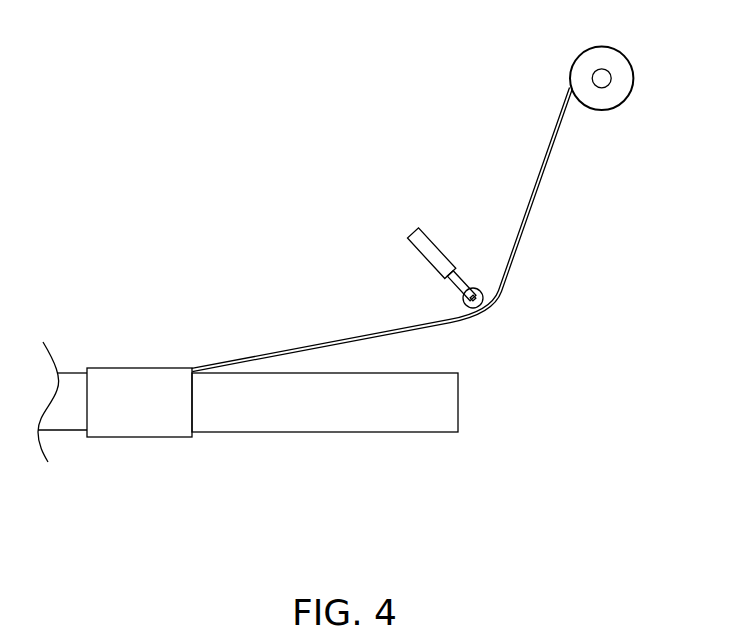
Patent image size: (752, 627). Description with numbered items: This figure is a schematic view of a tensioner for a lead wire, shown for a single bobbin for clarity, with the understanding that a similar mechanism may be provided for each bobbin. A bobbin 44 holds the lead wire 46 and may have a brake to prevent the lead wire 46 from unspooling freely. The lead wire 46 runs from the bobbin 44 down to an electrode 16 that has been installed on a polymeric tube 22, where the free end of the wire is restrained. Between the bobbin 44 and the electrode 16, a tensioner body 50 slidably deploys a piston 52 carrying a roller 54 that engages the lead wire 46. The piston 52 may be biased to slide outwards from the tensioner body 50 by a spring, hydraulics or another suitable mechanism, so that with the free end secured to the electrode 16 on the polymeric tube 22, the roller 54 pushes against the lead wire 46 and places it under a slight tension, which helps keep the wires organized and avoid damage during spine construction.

The electrode 16 is at (142, 367).
The polymeric tube 22 is at (257, 432).
The bobbin 44 is at (580, 57).
The lead wire 46 is at (527, 220).
The tensioner body 50 is at (435, 242).
The piston 52 is at (467, 277).
The roller 54 is at (462, 299).